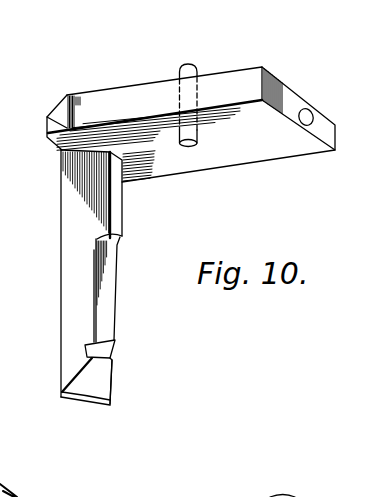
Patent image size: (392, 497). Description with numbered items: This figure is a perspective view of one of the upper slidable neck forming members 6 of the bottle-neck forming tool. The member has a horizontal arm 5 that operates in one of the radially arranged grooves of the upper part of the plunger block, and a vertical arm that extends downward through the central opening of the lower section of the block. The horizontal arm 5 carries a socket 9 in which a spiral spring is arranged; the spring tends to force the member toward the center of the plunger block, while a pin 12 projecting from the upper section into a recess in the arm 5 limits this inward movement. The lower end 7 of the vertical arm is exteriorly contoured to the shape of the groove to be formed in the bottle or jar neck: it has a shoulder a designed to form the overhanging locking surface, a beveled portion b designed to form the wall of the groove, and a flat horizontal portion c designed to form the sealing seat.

The pin 12 is at (193, 70).
The socket 9 is at (313, 112).
The slidable neck forming member 6 is at (74, 273).
The arm 5 is at (132, 272).
The shoulder a is at (110, 358).
The lower end 7 is at (108, 381).
The beveled portion b is at (100, 375).
The flat horizontal portion c is at (95, 397).